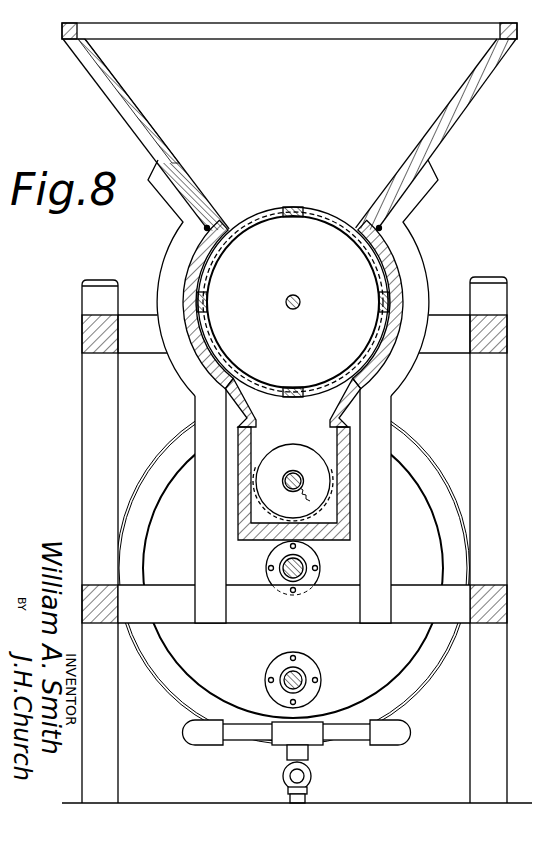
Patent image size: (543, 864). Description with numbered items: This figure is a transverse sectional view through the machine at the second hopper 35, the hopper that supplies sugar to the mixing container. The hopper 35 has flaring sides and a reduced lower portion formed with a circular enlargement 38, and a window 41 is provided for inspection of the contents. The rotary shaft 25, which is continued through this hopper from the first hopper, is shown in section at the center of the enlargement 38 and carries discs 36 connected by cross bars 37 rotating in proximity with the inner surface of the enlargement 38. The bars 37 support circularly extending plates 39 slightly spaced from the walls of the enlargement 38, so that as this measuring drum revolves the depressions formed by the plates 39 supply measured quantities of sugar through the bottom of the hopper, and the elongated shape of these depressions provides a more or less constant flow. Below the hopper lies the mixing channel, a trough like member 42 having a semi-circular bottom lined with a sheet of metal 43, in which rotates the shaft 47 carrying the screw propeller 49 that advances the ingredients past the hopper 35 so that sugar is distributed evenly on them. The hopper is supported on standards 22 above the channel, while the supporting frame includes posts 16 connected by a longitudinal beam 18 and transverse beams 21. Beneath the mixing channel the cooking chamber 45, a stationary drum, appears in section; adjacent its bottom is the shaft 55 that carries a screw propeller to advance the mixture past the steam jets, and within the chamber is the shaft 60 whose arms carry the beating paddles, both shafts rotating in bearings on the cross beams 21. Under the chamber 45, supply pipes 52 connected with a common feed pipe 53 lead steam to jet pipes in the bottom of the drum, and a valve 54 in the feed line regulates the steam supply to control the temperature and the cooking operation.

The posts 16 is at (498, 385).
The longitudinal beam 18 is at (506, 335).
The transverse beams 21 is at (442, 320).
The standards 22 is at (387, 559).
The rotary shaft 25 is at (300, 299).
The second hopper 35 is at (486, 107).
The discs 36 is at (342, 220).
The cross bars 37 is at (292, 206).
The circular enlargement 38 is at (395, 254).
The circularly extending plates 39 is at (262, 218).
The window 41 is at (118, 104).
The trough like member 42 is at (348, 498).
The sheet of metal 43 is at (252, 477).
The cooking chamber 45 is at (177, 668).
The shaft 47 is at (296, 472).
The roller 49 is at (280, 444).
The supply pipes 52 is at (185, 732).
The feed pipe 53 is at (287, 750).
The valve 54 is at (287, 773).
The shaft 55 is at (307, 675).
The shaft 60 is at (308, 563).